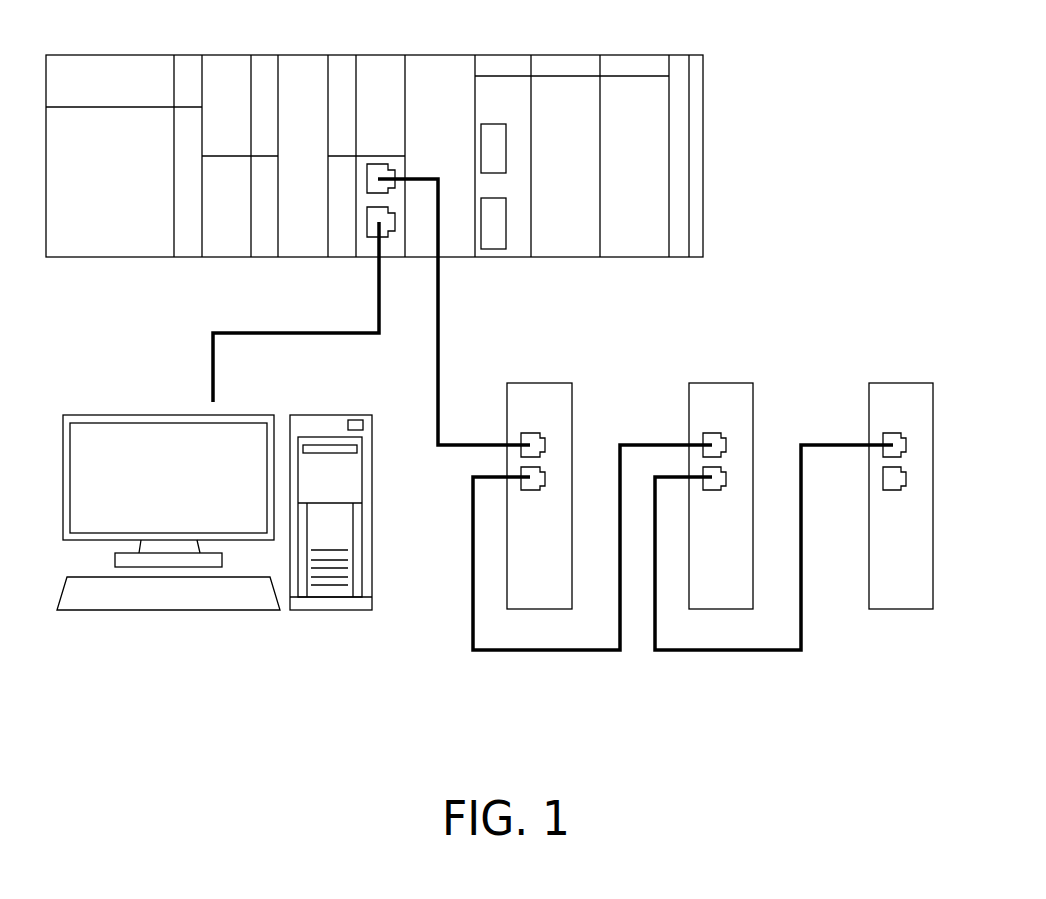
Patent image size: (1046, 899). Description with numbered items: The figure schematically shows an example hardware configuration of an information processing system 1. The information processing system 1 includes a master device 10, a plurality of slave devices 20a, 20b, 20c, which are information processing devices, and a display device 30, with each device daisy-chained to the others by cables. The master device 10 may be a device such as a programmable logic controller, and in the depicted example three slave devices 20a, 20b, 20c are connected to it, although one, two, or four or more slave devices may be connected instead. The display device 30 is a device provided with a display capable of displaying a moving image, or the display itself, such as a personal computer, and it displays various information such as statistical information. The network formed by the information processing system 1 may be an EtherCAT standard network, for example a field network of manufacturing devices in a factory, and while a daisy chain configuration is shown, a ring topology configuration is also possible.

The information processing system 1 is at (838, 66).
The master device 10 is at (660, 54).
The slave device 20a is at (540, 382).
The slave device 20b is at (720, 382).
The slave device 20c is at (900, 382).
The display device 30 is at (110, 405).